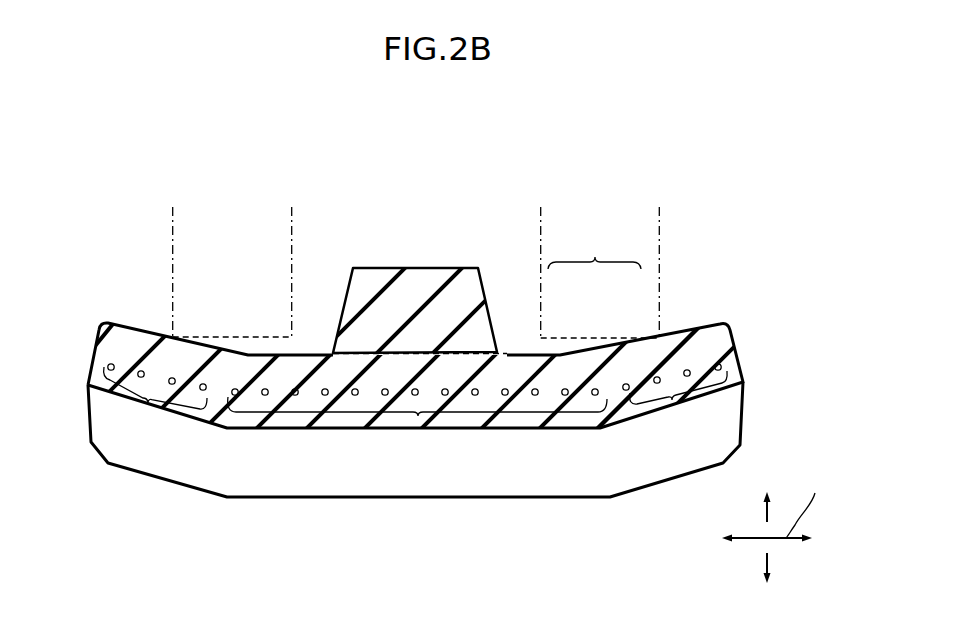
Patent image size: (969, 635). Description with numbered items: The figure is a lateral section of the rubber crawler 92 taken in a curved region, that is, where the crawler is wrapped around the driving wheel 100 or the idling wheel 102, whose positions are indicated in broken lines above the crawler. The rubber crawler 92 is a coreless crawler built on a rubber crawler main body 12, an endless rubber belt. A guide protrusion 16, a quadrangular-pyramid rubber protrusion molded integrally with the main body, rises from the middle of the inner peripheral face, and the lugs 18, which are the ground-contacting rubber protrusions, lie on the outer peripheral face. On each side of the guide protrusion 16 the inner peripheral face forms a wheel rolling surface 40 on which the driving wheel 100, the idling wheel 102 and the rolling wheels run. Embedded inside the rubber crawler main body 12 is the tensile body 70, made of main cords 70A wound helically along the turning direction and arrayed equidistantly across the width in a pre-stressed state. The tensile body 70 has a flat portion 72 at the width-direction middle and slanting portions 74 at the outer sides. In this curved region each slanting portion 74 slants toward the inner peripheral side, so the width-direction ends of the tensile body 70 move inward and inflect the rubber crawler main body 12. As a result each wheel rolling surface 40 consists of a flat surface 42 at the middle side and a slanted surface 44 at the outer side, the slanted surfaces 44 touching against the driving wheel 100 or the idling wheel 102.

The rubber crawler main body 12 is at (96, 345).
The guide protrusion 16 is at (456, 268).
The lug 18 is at (232, 498).
The wheel rolling surface 40 is at (415, 343).
The flat surface 42 is at (267, 353).
The slanted surface 44 is at (213, 345).
The tensile body 70 is at (730, 359).
The main cord 70A is at (530, 400).
The flat portion 72 is at (418, 416).
The slanting portion 74 is at (147, 403).
The rubber crawler 92 is at (82, 238).
The driving wheel 100 is at (172, 214).
The idling wheel 102 is at (660, 217).